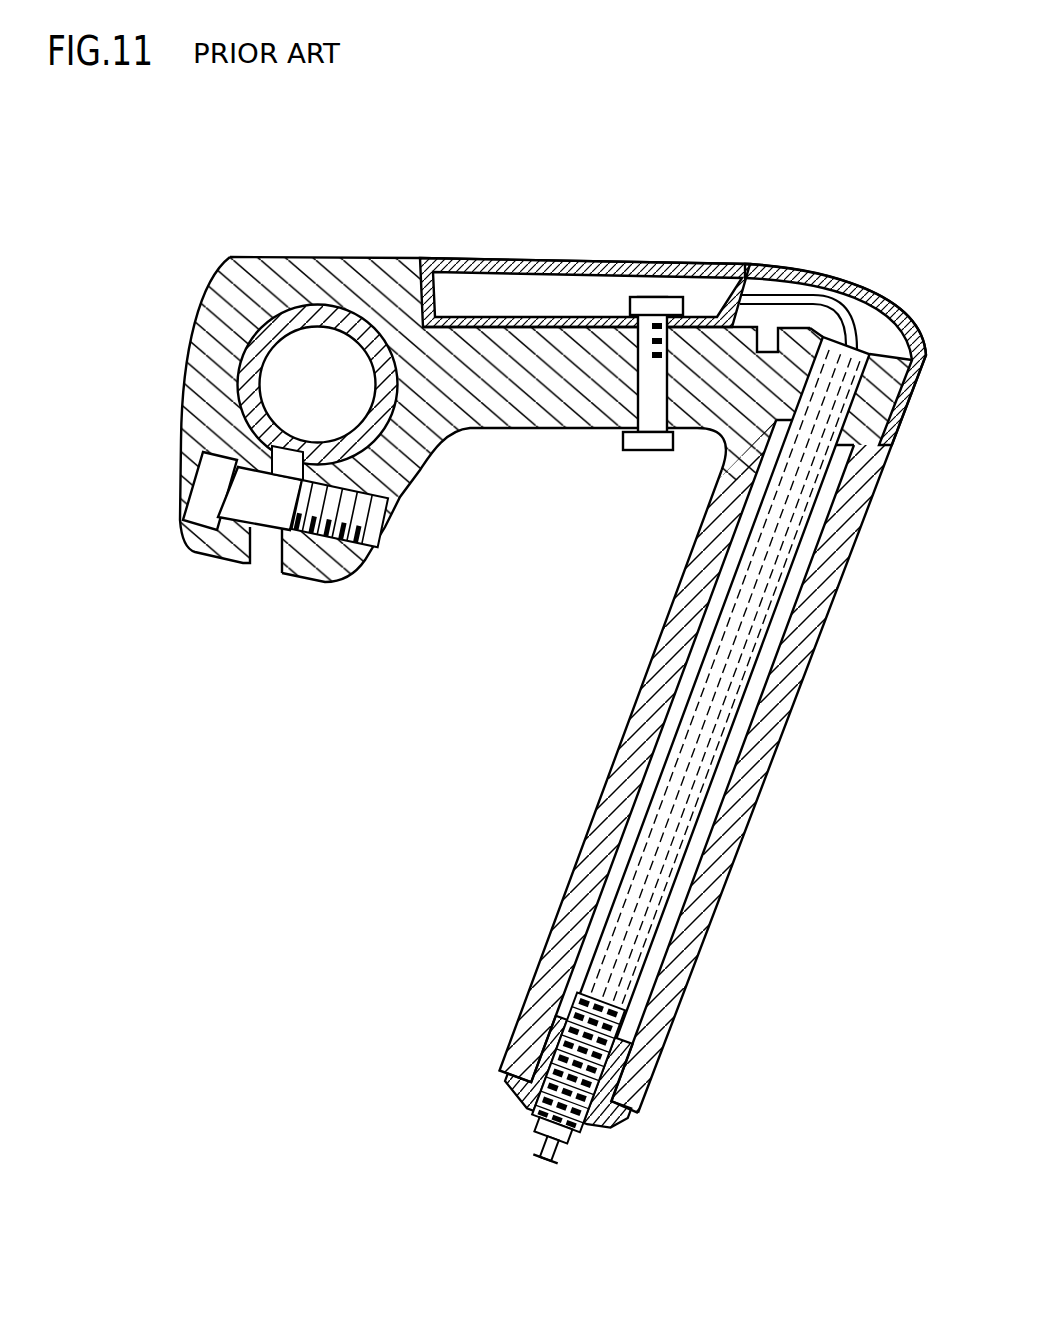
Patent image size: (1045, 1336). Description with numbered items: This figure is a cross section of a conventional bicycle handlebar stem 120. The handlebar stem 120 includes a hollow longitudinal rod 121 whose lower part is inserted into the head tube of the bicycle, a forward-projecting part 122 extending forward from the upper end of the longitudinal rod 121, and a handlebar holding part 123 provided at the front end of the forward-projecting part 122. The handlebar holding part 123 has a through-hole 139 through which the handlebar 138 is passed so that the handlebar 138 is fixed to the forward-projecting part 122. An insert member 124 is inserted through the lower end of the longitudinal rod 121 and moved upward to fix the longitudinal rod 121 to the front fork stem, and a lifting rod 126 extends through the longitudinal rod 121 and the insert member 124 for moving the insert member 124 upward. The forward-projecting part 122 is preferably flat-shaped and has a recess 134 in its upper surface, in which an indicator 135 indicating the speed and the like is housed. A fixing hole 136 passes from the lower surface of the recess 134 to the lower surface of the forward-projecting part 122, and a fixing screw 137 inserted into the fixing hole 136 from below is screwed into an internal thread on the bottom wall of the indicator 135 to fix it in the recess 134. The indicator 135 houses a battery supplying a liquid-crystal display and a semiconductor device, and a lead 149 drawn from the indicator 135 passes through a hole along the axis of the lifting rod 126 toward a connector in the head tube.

The handlebar stem 120 is at (188, 172).
The hollow longitudinal rod 121 is at (595, 769).
The forward-projecting part 122 is at (710, 240).
The handlebar holding part 123 is at (164, 394).
The insert member 124 is at (604, 1150).
The lifting rod 126 is at (767, 689).
The recess 134 is at (515, 330).
The indicator 135 is at (541, 262).
The fixing hole 136 is at (633, 405).
The fixing screw 137 is at (648, 412).
The handlebar 138 is at (253, 367).
The through-hole 139 is at (250, 312).
The lead 149 is at (843, 310).